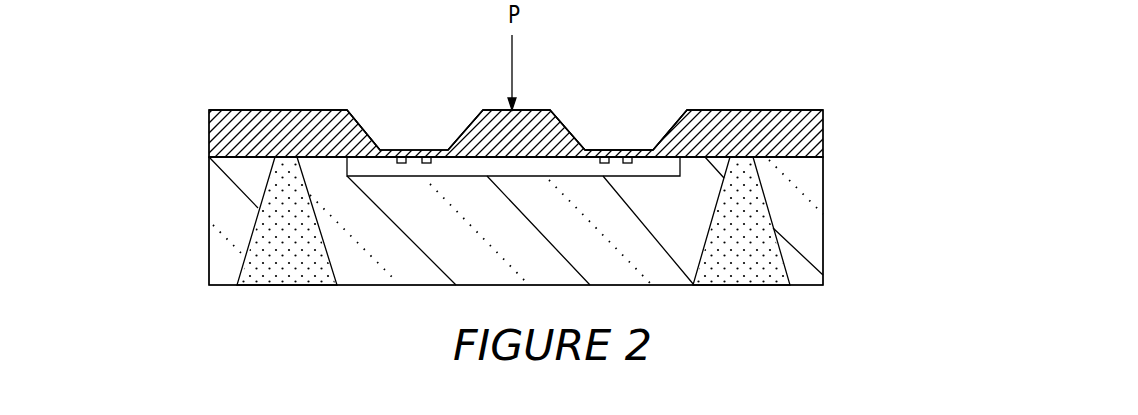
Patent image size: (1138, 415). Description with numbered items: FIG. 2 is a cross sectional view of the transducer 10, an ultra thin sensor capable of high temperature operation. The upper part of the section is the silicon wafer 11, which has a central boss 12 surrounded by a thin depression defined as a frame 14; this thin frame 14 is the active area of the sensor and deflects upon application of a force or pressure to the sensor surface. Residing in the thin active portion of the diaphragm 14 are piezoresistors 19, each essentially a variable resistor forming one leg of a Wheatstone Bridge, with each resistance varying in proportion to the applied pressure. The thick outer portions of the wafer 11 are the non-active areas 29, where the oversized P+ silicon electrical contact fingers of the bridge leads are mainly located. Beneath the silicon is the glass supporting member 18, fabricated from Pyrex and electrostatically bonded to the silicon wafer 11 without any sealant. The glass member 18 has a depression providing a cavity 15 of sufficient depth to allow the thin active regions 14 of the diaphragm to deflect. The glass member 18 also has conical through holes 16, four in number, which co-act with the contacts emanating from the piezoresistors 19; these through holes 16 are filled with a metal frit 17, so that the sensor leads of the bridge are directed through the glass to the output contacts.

The transducer 10 is at (852, 101).
The wafer 11 is at (205, 130).
The central boss 12 is at (527, 110).
The frame 14 is at (612, 135).
The cavity 15 is at (692, 165).
The through holes 16 is at (787, 215).
The metal frit 17 is at (765, 274).
The glass supporting member 18 is at (205, 204).
The piezoresistors 19 is at (427, 152).
The non-active areas 29 is at (272, 110).